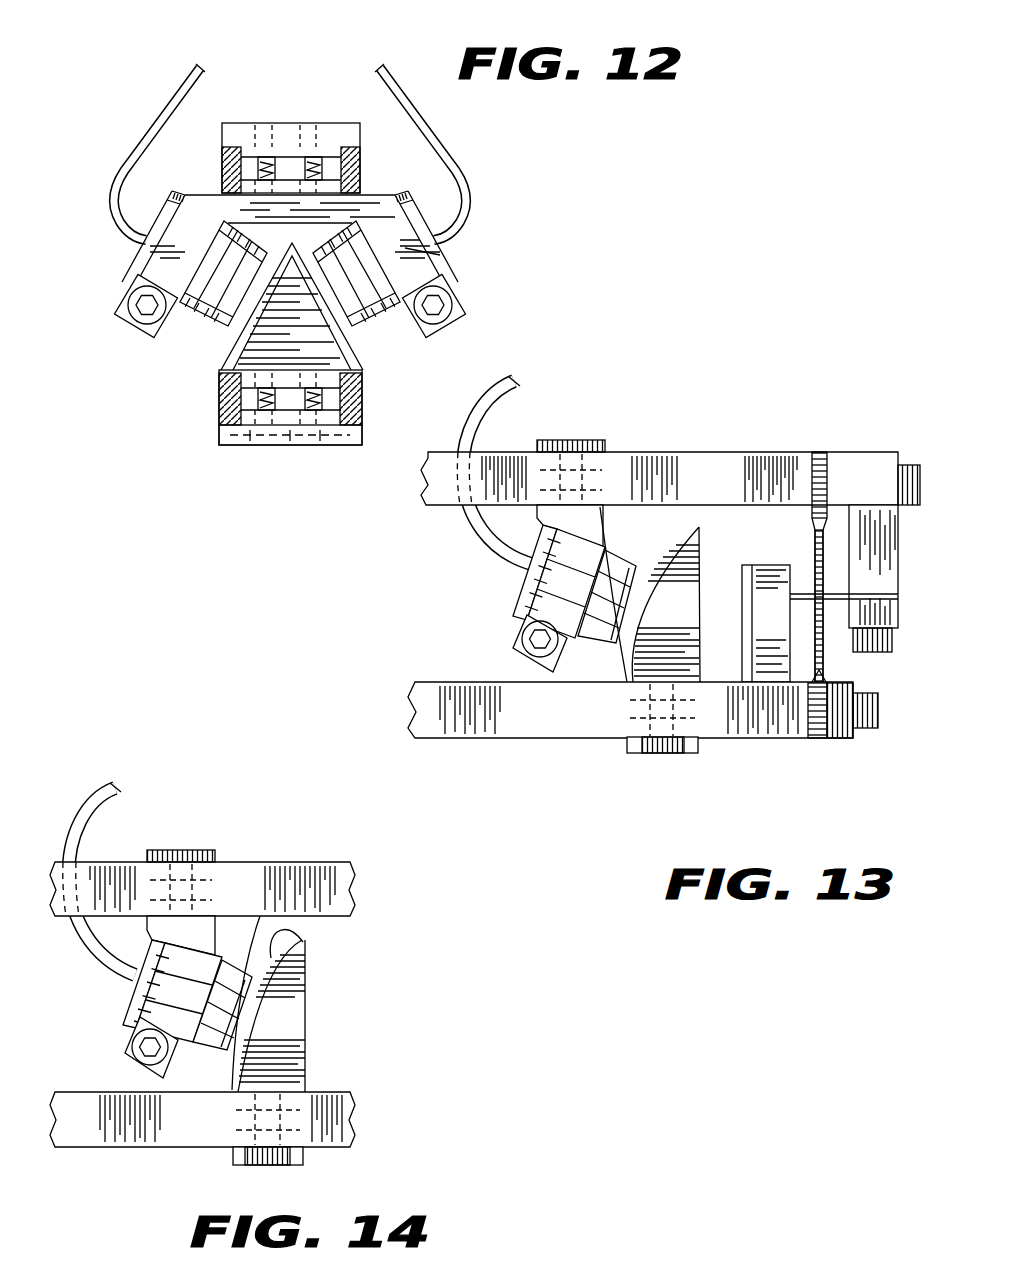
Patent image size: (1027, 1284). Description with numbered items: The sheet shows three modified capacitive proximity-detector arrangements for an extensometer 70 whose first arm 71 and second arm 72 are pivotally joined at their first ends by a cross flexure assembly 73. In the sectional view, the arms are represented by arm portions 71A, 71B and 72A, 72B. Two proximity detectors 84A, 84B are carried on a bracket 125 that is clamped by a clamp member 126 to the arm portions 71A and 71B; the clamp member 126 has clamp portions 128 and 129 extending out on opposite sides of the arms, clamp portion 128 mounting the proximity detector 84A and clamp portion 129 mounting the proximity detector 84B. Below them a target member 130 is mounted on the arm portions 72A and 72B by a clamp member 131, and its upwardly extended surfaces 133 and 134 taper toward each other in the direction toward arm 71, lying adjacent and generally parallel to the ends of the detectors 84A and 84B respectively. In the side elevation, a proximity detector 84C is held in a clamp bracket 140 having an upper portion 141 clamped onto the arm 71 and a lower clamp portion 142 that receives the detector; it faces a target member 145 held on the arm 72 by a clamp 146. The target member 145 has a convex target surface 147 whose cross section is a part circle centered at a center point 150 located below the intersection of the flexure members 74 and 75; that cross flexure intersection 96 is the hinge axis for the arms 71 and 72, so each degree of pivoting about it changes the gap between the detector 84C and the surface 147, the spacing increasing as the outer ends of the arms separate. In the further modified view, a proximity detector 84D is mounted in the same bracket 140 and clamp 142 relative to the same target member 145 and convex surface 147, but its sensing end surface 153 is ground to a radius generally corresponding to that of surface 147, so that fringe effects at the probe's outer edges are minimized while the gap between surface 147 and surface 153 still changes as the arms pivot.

In FIG. 13, the extensometer 70 is at (737, 452).
In FIG. 14, the extensometer 70 is at (232, 862).
In FIG. 12, the first arm 71 is at (216, 150).
In FIG. 13, the first arm 71 is at (752, 487).
In FIG. 12, the arm portion 71A is at (222, 175).
In FIG. 12, the arm portion 71B is at (362, 172).
In FIG. 12, the second arm 72 is at (214, 399).
In FIG. 13, the second arm 72 is at (559, 740).
In FIG. 14, the second arm 72 is at (153, 1148).
In FIG. 12, the arm portion 72A is at (218, 410).
In FIG. 12, the arm portion 72B is at (362, 400).
In FIG. 13, the cross flexure assembly 73 is at (822, 579).
In FIG. 13, the flexure member 74 is at (822, 472).
In FIG. 13, the flexure member 75 is at (867, 593).
In FIG. 12, the proximity detector 84A is at (432, 332).
In FIG. 12, the proximity detector 84B is at (117, 268).
In FIG. 13, the proximity detector 84C is at (630, 572).
In FIG. 14, the proximity detector 84D is at (232, 978).
In FIG. 13, the cross flexure intersection 96 is at (822, 630).
In FIG. 12, the bracket 125 is at (397, 255).
In FIG. 12, the clamp member 126 is at (271, 122).
In FIG. 12, the clamp portion 128 is at (422, 277).
In FIG. 12, the clamp portion 129 is at (190, 248).
In FIG. 12, the target member 130 is at (262, 325).
In FIG. 12, the clamp member 131 is at (278, 447).
In FIG. 12, the target surface 133 is at (352, 355).
In FIG. 12, the target surface 134 is at (243, 355).
In FIG. 13, the clamp bracket 140 is at (584, 538).
In FIG. 14, the clamp bracket 140 is at (157, 922).
In FIG. 13, the upper portion 141 is at (572, 450).
In FIG. 13, the lower clamp portion 142 is at (555, 580).
In FIG. 14, the lower clamp portion 142 is at (173, 982).
In FIG. 13, the target member 145 is at (693, 580).
In FIG. 14, the target member 145 is at (287, 1003).
In FIG. 13, the clamp 146 is at (672, 755).
In FIG. 14, the clamp 146 is at (277, 1165).
In FIG. 13, the target surface 147 is at (627, 652).
In FIG. 14, the target surface 147 is at (300, 926).
In FIG. 13, the center point 150 is at (832, 678).
In FIG. 14, the sensing end surface 153 is at (240, 1027).